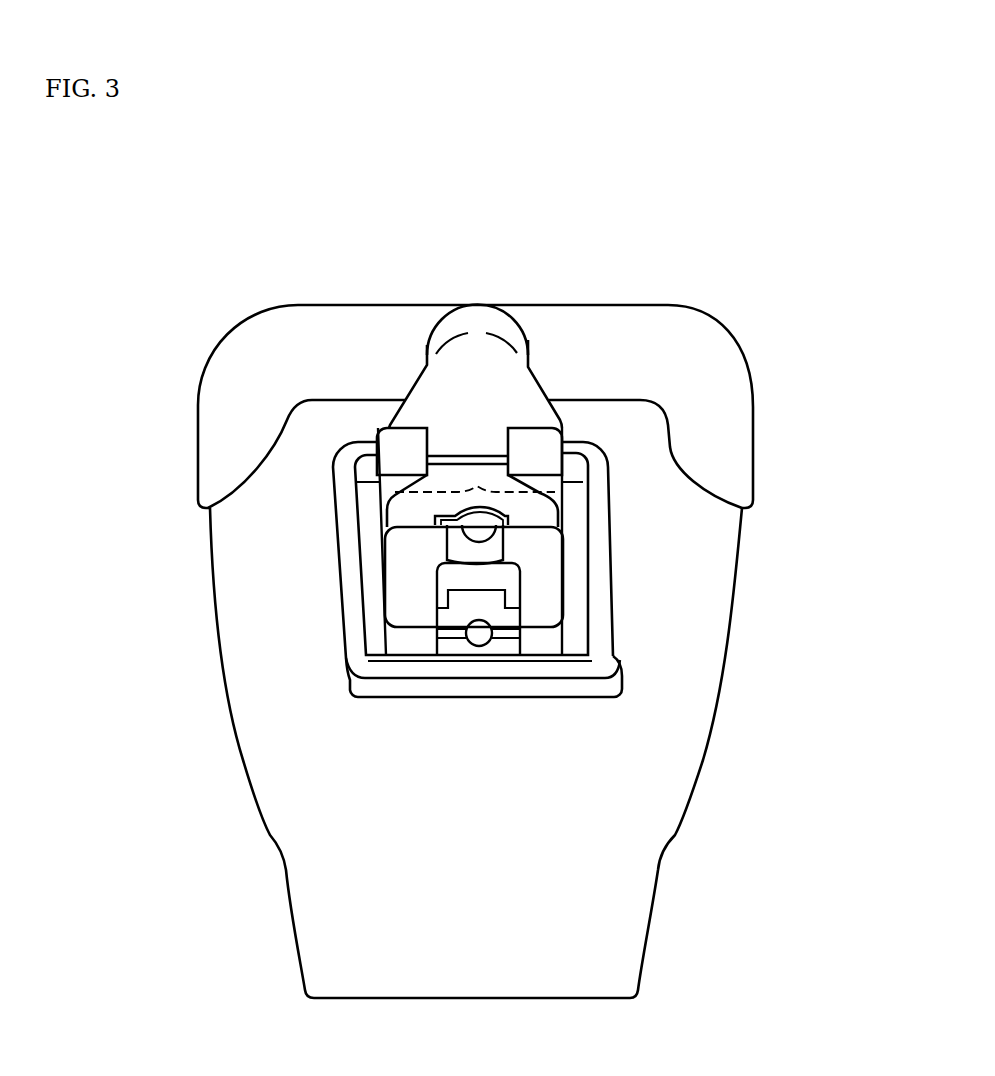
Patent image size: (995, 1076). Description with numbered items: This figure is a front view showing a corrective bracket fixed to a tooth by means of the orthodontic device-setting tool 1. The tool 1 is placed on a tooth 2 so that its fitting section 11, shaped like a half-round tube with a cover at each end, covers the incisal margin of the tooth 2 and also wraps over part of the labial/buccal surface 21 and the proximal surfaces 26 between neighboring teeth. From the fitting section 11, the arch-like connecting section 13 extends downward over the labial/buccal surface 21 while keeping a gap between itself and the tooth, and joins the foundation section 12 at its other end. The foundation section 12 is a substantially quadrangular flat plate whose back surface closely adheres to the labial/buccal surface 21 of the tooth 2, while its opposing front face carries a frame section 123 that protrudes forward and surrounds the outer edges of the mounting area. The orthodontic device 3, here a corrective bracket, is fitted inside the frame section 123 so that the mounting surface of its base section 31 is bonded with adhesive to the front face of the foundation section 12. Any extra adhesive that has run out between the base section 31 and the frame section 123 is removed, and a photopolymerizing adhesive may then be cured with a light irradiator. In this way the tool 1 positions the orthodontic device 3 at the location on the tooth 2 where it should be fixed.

The orthodontic device-setting tool 1 is at (197, 308).
The fitting section 11 is at (660, 340).
The foundation section 12 is at (340, 580).
The connecting section 13 is at (470, 388).
The tooth 2 is at (230, 858).
The labial/buccal surface 21 is at (257, 543).
The proximal surfaces 26 is at (218, 662).
The orthodontic device 3 is at (594, 510).
The base section 31 is at (580, 580).
The frame section 123 is at (602, 660).